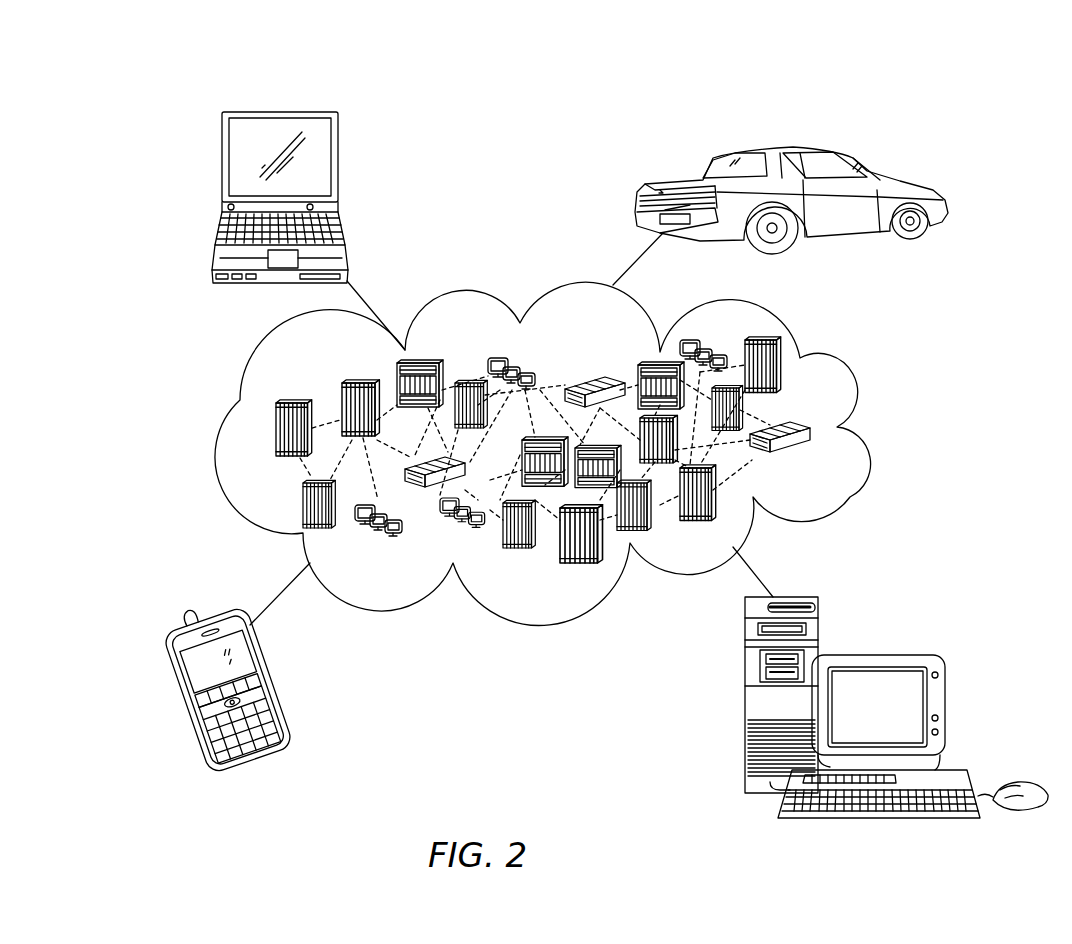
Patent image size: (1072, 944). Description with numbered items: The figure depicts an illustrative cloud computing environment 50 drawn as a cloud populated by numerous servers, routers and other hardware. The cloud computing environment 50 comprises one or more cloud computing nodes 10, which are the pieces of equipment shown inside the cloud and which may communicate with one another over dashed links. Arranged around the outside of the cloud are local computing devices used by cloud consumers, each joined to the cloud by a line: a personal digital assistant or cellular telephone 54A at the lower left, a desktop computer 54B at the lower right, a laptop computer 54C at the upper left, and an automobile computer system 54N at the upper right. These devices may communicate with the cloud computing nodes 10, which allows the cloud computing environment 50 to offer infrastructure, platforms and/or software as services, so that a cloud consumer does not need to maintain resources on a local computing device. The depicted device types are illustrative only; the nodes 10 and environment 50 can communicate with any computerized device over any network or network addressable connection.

The cloud computing node 10 is at (833, 485).
The cloud computing environment 50 is at (842, 372).
The personal digital assistant or cellular telephone 54A is at (180, 690).
The desktop computer 54B is at (892, 656).
The laptop computer 54C is at (244, 112).
The automobile computer system 54N is at (852, 163).